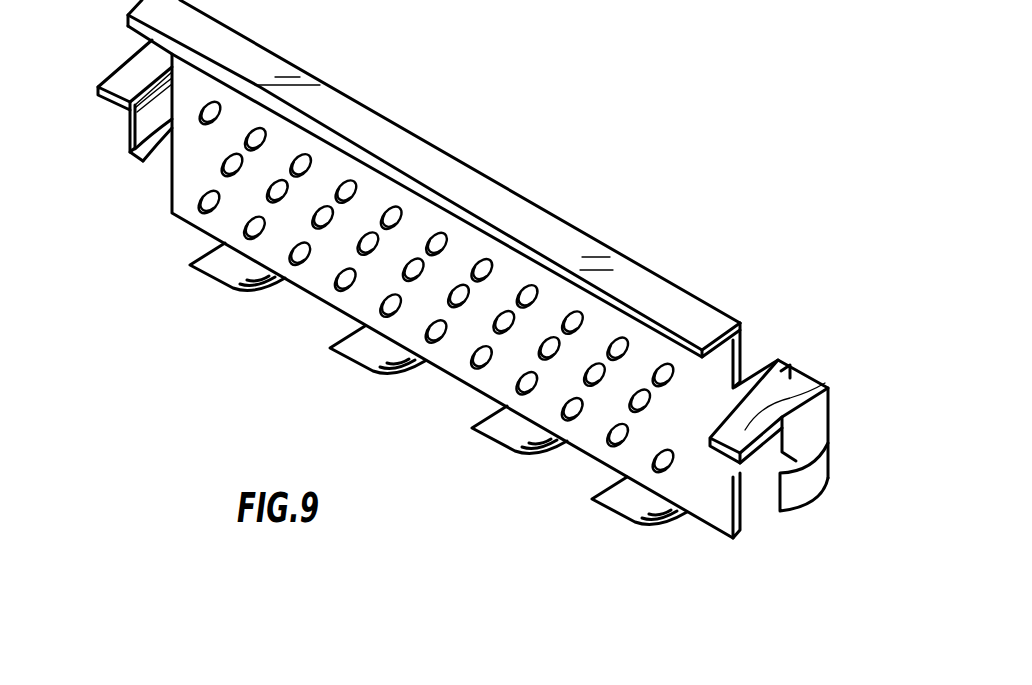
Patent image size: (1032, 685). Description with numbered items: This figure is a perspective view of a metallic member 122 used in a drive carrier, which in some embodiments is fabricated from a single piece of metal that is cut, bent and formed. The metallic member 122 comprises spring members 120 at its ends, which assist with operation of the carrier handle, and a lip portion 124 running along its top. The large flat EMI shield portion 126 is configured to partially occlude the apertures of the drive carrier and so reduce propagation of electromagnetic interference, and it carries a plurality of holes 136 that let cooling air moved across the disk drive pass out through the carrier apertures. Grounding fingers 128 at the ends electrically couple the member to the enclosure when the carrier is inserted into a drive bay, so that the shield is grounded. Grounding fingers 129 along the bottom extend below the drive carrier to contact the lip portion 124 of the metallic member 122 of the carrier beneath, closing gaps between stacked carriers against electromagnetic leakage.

The spring member 120 is at (122, 85).
The metallic member 122 is at (692, 108).
The lip portion 124 is at (512, 191).
The EMI shield portion 126 is at (192, 164).
The grounding fingers 128 is at (142, 160).
The grounding fingers 129 is at (363, 345).
The holes 136 is at (414, 258).